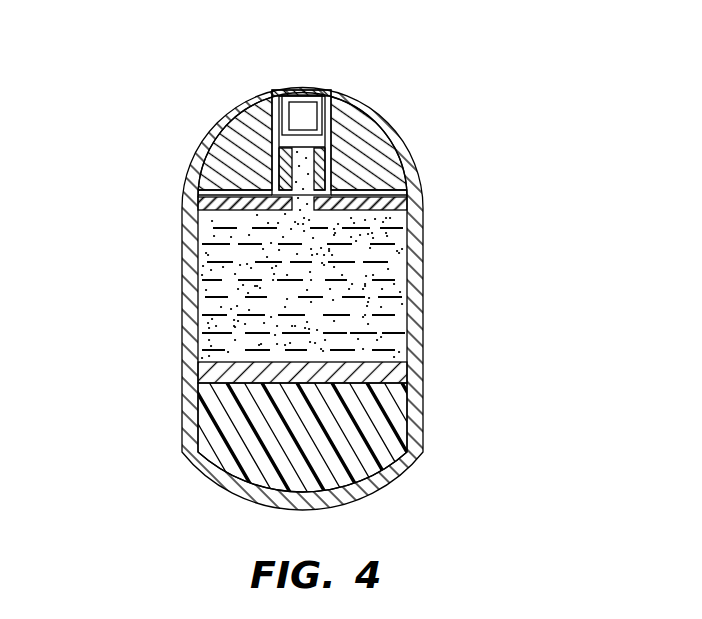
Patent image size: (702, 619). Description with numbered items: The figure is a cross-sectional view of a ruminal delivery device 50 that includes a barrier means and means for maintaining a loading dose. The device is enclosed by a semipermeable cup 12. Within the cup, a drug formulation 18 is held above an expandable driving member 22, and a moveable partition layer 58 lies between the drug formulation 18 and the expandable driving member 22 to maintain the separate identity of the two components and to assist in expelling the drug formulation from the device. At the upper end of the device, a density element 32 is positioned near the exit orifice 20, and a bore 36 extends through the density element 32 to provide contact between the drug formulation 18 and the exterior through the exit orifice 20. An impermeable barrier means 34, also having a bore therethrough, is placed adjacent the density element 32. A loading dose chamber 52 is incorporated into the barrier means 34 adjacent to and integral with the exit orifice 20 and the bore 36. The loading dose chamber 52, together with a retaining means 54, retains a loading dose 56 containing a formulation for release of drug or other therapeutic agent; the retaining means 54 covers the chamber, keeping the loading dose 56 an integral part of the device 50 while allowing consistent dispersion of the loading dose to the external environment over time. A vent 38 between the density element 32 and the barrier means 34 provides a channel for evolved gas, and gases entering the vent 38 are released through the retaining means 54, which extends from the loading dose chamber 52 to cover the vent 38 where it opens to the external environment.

The semipermeable cup 12 is at (190, 446).
The drug formulation 18 is at (393, 283).
The exit orifice 20 is at (267, 126).
The expandable driving member 22 is at (393, 422).
The density element 32 is at (210, 181).
The impermeable barrier means 34 is at (410, 207).
The bore 36 is at (300, 175).
The vent 38 is at (387, 191).
The device 50 is at (426, 122).
The loading dose chamber 52 is at (285, 87).
The retaining means 54 is at (303, 88).
The loading dose 56 is at (309, 113).
The moveable partition layer 58 is at (215, 377).